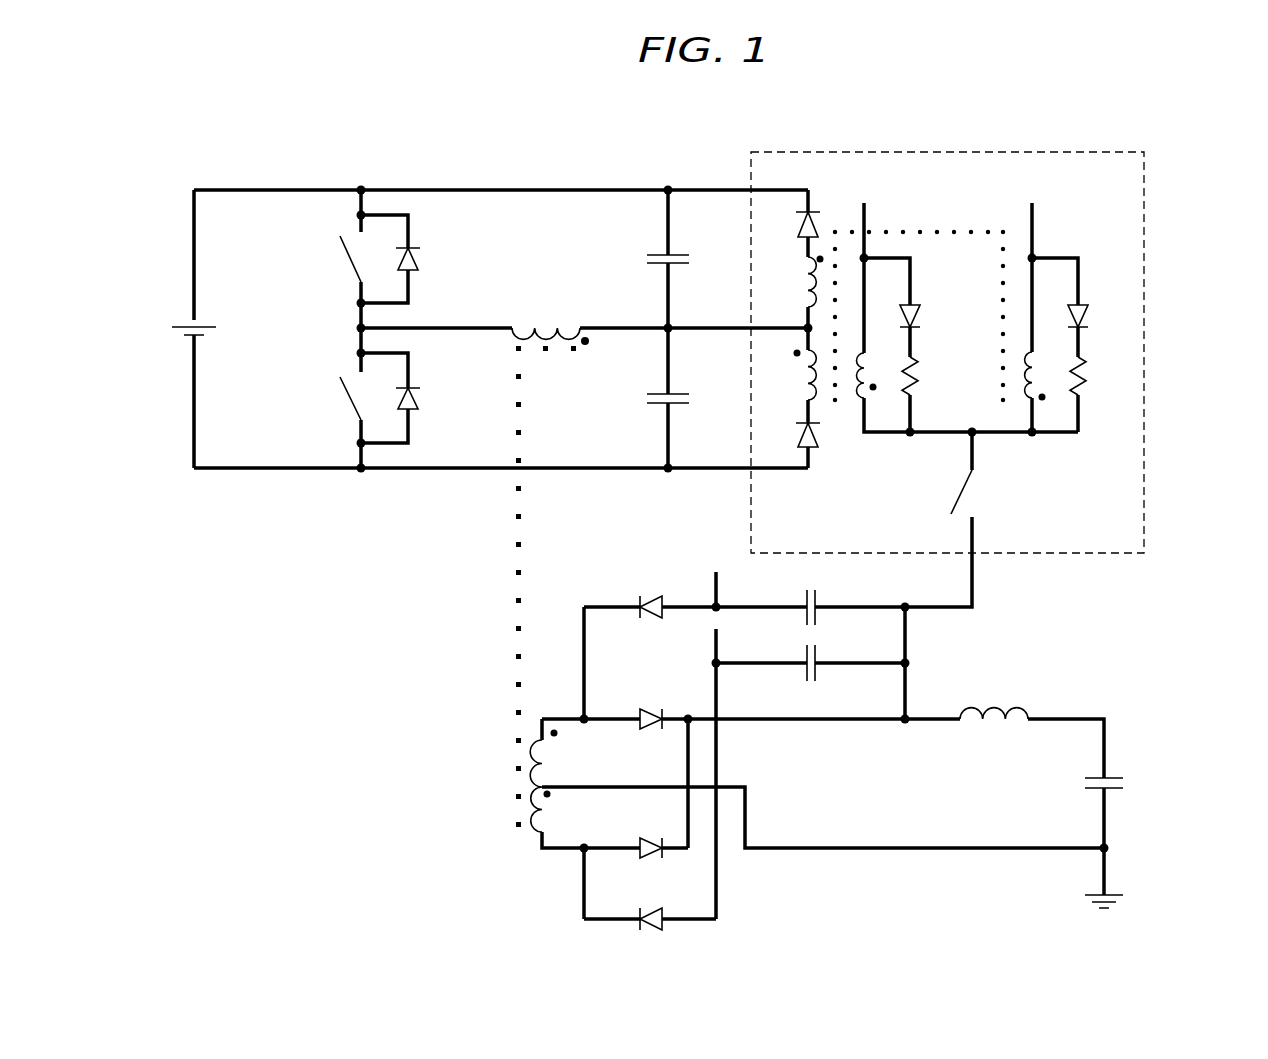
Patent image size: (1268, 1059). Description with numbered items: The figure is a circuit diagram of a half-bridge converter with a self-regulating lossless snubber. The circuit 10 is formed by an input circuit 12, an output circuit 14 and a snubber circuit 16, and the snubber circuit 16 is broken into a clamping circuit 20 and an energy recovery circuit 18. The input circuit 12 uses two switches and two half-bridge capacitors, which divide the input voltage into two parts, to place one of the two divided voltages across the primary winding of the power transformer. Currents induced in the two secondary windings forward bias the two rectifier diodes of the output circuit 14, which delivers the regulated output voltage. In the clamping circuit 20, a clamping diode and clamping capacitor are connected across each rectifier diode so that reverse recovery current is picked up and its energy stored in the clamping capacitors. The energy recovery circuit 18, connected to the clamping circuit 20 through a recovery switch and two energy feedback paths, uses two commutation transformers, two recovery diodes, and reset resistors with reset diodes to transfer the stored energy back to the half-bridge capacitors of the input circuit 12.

The circuit 10 is at (519, 94).
The input circuit 12 is at (362, 161).
The output circuit 14 is at (1096, 670).
The snubber circuit 16 is at (1189, 502).
The energy recovery circuit 18 is at (1189, 289).
The clamping circuit 20 is at (609, 560).